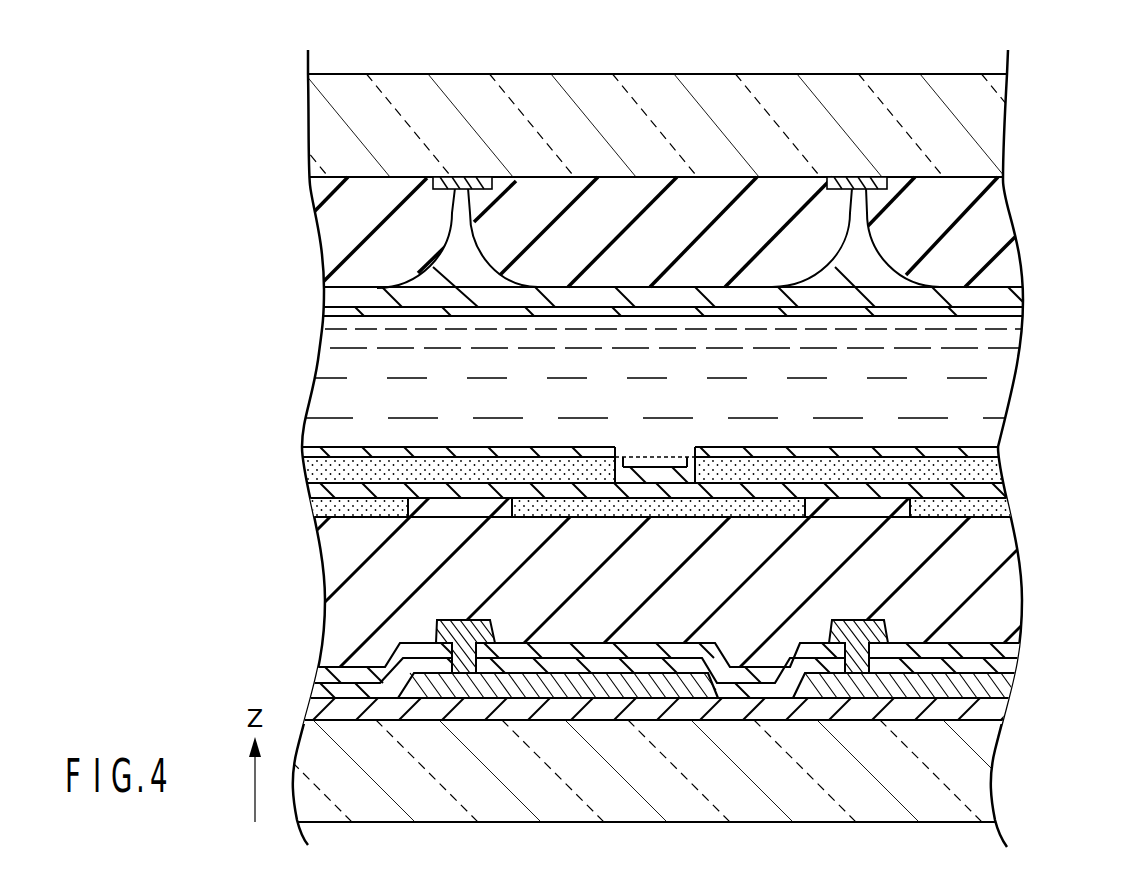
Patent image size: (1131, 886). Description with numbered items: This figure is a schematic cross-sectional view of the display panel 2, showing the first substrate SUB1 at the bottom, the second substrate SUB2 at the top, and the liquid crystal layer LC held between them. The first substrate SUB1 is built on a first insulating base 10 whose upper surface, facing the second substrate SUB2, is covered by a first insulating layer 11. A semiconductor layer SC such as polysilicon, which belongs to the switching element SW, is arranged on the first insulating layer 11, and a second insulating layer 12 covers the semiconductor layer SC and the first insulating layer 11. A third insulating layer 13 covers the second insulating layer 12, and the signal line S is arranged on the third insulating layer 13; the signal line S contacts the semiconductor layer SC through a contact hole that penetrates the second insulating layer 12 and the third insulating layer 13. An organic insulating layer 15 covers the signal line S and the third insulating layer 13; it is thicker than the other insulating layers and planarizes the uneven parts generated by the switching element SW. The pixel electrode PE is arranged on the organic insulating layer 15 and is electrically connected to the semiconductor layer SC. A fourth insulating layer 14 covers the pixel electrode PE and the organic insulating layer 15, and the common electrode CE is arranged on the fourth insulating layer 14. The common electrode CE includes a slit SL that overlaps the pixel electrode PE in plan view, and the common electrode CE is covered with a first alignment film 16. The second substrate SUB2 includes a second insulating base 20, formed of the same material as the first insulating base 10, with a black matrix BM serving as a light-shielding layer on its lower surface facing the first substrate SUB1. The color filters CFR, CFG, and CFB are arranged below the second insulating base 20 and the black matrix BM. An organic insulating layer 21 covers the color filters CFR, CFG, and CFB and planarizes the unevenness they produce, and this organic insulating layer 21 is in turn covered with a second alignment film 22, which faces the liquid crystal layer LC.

The display panel 2 is at (970, 40).
The second substrate SUB2 is at (286, 120).
The first substrate SUB1 is at (298, 562).
The second insulating base 20 is at (988, 108).
The black matrix BM is at (464, 178).
The color filter CFR is at (326, 236).
The color filter CFG is at (700, 265).
The color filter CFB is at (1010, 248).
The organic insulating layer 21 is at (1006, 297).
The second alignment film 22 is at (1006, 312).
The liquid crystal layer LC is at (322, 400).
The first alignment film 16 is at (985, 447).
The common electrode CE is at (470, 472).
The slit SL is at (656, 438).
The fourth insulating layer 14 is at (993, 493).
The pixel electrode PE is at (358, 506).
The organic insulating layer 15 is at (1005, 580).
The signal line S is at (462, 624).
The third insulating layer 13 is at (1000, 648).
The second insulating layer 12 is at (1000, 666).
The semiconductor layer SC is at (468, 690).
The switching element SW is at (553, 712).
The first insulating layer 11 is at (985, 710).
The first insulating base 10 is at (985, 778).